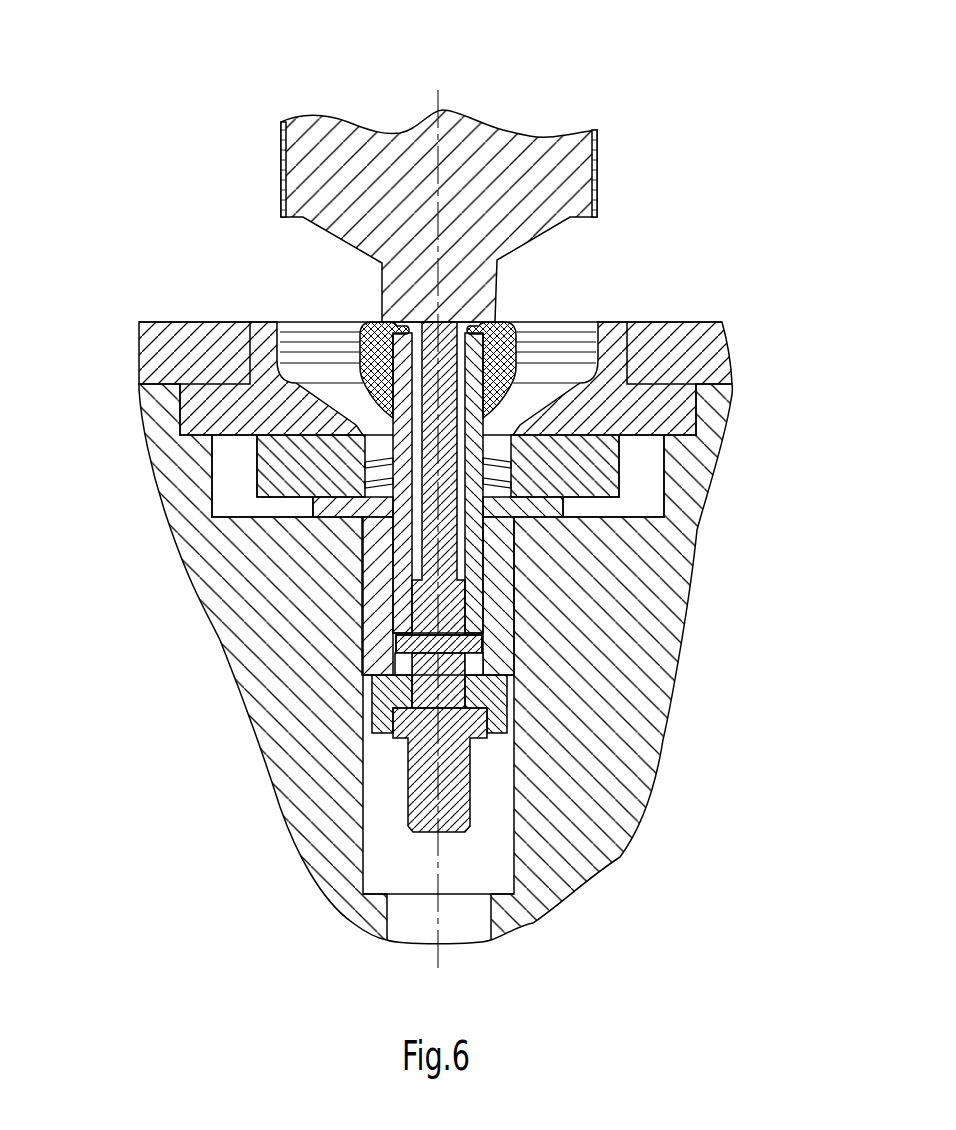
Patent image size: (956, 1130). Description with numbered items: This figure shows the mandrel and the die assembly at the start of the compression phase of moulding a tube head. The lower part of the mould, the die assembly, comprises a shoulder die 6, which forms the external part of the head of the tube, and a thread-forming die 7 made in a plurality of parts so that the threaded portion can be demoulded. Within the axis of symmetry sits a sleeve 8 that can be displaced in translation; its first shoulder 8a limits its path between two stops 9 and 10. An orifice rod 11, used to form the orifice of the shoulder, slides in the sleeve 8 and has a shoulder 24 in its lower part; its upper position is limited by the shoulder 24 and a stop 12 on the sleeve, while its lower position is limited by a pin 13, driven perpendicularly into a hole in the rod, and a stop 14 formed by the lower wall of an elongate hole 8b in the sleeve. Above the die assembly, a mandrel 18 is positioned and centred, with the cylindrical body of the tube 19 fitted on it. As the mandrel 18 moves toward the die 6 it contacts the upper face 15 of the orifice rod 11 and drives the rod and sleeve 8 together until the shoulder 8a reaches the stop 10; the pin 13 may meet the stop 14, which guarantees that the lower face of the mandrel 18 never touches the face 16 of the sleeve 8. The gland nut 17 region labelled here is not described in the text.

The shoulder die 6 is at (260, 405).
The thread-forming die 7 is at (290, 470).
The sleeve 8 is at (408, 412).
The first shoulder 8a is at (510, 703).
The elongate hole 8b is at (470, 660).
The stop 9 is at (373, 677).
The stop 10 is at (373, 897).
The orifice rod 11 is at (438, 443).
The stop 12 is at (393, 707).
The pin 13 is at (400, 647).
The stop 14 is at (470, 660).
The upper face 15 is at (432, 318).
The face 16 is at (467, 323).
The gland nut 17 is at (513, 372).
The mandrel 18 is at (385, 213).
The tube 19 is at (283, 200).
The shoulder 24 is at (468, 730).